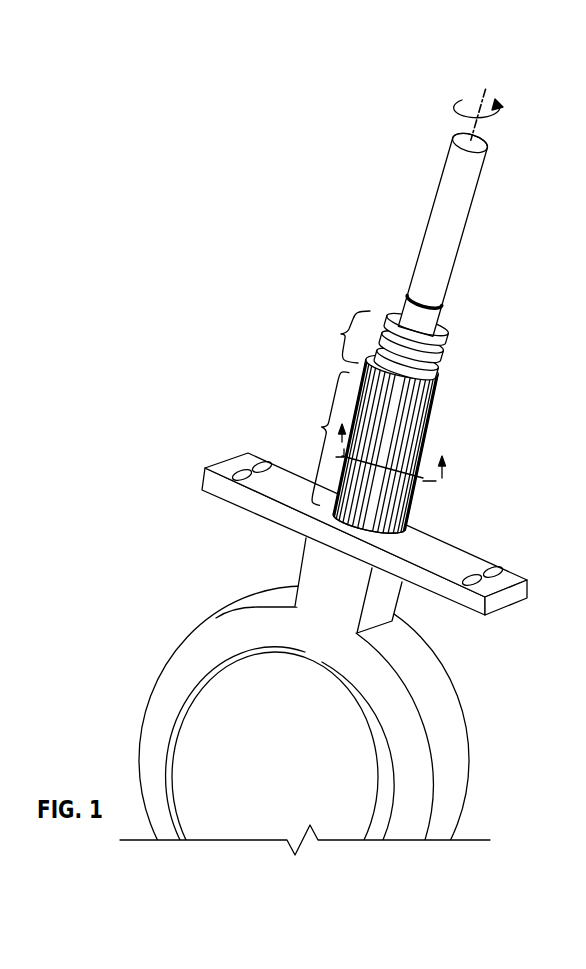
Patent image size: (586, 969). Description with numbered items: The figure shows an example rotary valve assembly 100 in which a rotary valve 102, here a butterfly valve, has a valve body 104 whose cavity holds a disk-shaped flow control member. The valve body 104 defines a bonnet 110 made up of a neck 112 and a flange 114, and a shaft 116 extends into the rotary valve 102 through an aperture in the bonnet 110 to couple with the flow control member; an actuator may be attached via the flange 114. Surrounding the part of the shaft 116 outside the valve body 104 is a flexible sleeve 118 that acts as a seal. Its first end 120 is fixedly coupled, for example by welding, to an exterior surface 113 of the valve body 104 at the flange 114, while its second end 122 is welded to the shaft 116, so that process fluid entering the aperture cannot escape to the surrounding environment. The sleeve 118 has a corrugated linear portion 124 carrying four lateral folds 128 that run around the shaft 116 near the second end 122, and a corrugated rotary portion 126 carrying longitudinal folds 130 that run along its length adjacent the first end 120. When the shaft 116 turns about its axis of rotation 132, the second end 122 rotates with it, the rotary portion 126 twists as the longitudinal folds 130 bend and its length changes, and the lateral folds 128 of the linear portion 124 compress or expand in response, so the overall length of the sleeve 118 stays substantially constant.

The rotary valve assembly 100 is at (244, 219).
The rotary valve 102 is at (353, 536).
The valve body 104 is at (331, 760).
The bonnet 110 is at (333, 592).
The neck 112 is at (383, 590).
The exterior surface 113 is at (452, 558).
The flange 114 is at (508, 595).
The shaft 116 is at (464, 236).
The sleeve 118 is at (396, 455).
The first end 120 is at (357, 529).
The second end 122 is at (438, 318).
The linear portion 124 is at (334, 337).
The rotary portion 126 is at (309, 437).
The lateral folds 128 is at (440, 351).
The longitudinal folds 130 is at (420, 442).
The axis of rotation 132 is at (478, 125).